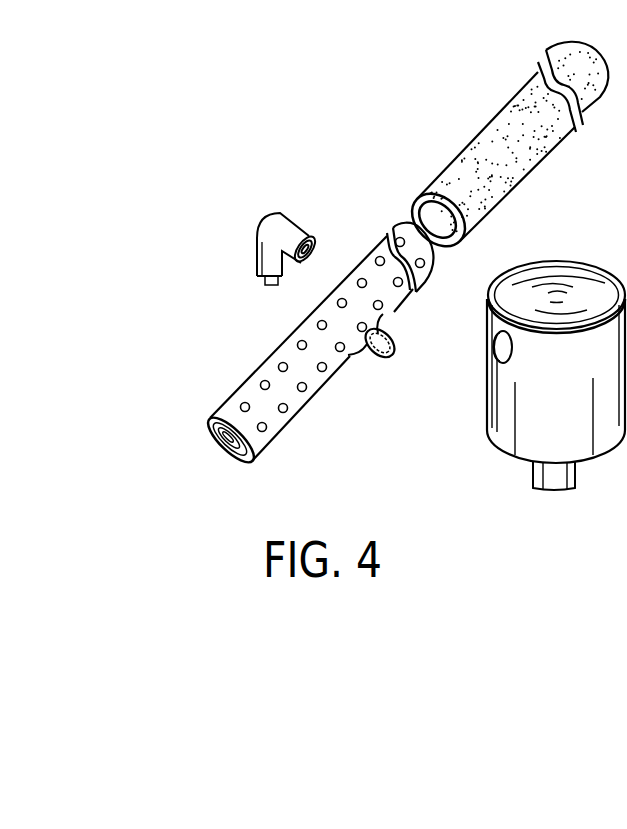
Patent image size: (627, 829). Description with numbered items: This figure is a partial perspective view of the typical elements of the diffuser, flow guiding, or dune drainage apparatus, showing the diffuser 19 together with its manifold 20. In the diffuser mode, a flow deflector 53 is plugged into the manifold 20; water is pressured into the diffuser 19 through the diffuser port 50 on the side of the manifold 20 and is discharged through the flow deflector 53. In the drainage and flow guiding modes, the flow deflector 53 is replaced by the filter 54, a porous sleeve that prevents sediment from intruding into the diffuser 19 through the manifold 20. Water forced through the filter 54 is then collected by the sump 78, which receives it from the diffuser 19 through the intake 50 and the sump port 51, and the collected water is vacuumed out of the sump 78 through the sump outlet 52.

The diffuser 19 is at (235, 468).
The manifold 20 is at (304, 391).
The diffuser port 50 is at (382, 357).
The sump port 51 is at (493, 347).
The sump outlet 52 is at (575, 491).
The flow deflector 53 is at (255, 233).
The filter 54 is at (528, 170).
The sump 78 is at (474, 432).